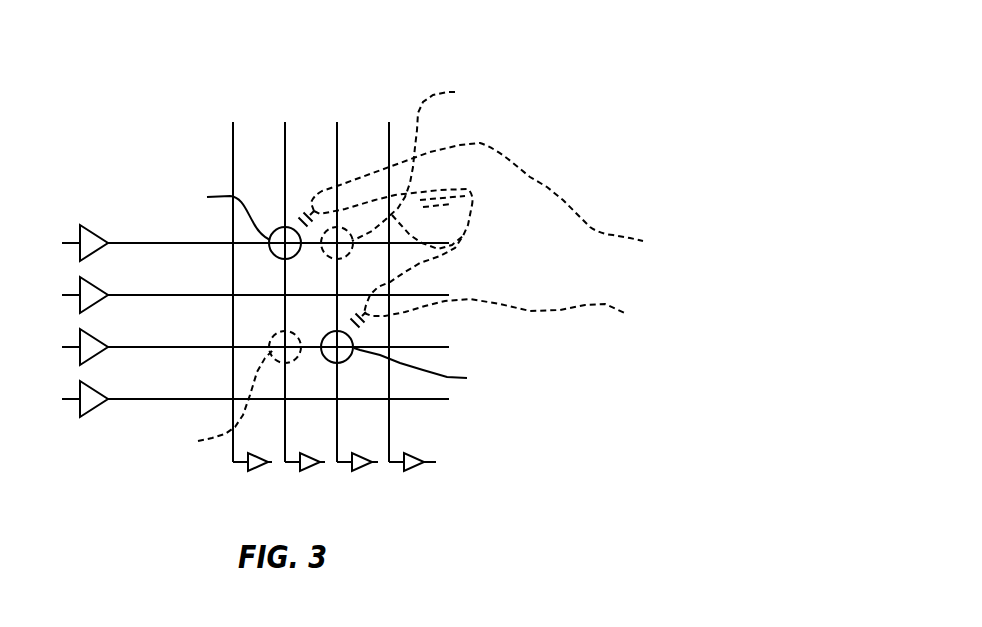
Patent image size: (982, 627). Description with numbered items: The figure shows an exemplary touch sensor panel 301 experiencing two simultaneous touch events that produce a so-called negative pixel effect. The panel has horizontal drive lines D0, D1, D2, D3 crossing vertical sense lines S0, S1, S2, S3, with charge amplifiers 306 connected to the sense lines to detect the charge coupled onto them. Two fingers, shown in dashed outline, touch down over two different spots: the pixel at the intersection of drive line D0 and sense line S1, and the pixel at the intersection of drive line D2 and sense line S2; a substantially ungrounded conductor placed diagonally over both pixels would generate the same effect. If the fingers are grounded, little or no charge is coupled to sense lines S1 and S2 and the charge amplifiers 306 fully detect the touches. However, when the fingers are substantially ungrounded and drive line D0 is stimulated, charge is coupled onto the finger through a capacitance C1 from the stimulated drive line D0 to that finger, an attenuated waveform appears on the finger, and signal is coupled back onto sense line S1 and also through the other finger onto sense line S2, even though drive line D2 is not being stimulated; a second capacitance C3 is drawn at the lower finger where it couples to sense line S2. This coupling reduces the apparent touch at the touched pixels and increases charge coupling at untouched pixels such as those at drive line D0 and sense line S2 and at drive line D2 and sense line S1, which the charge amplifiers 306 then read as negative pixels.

The touch sensor panel 301 is at (334, 246).
The charge amplifiers 306 is at (412, 466).
The capacitance C1 is at (300, 225).
The finger-to-pixel capacitance at PD2,S2 C3 is at (352, 318).
The sense line S0 is at (232, 272).
The sense line S1 is at (284, 272).
The sense line S2 is at (336, 272).
The sense line S3 is at (389, 272).
The drive line D0 is at (255, 236).
The drive line D1 is at (255, 288).
The drive line D2 is at (255, 340).
The drive line D3 is at (255, 391).